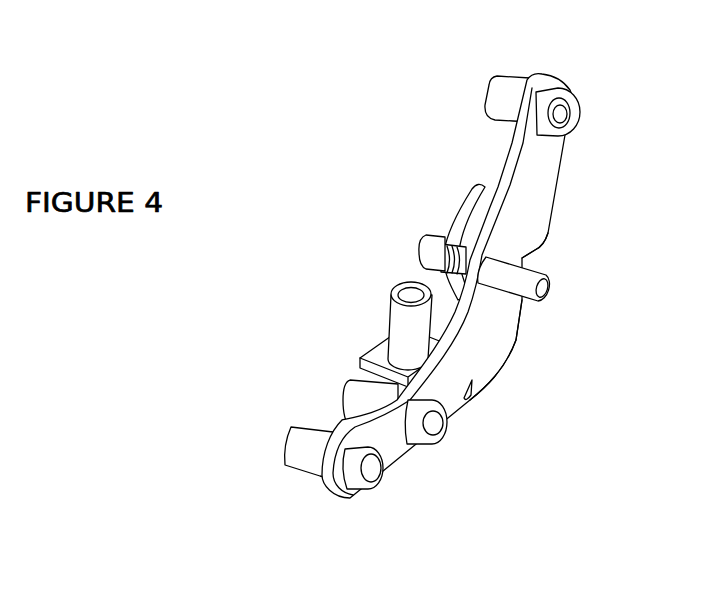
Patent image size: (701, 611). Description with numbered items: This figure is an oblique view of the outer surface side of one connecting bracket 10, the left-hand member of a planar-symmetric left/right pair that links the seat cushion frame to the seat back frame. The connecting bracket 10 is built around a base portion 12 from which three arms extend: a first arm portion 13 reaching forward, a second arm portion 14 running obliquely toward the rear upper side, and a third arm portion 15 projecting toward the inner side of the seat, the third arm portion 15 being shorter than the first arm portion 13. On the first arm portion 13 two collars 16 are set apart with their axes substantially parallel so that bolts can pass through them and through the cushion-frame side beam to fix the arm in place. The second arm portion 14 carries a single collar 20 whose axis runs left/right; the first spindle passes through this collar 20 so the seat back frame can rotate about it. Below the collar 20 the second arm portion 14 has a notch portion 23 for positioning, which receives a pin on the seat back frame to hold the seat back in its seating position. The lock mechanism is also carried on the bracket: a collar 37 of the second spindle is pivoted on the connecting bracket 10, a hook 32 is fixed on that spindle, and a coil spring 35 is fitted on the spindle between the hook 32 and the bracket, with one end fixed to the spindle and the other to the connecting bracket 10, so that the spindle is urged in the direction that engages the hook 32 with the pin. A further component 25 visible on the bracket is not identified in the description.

The connecting bracket 10 is at (540, 75).
The base portion 12 is at (497, 348).
The first arm portion 13 is at (325, 490).
The second arm portion 14 is at (568, 92).
The third arm portion 15 is at (362, 359).
The collar 16 is at (356, 400).
The collar 20 is at (490, 82).
The notch portion for positioning 23 is at (533, 247).
The cylindrical post 25 is at (400, 284).
The hook 32 is at (475, 187).
The coil spring 35 is at (443, 238).
The collar 37 is at (552, 292).